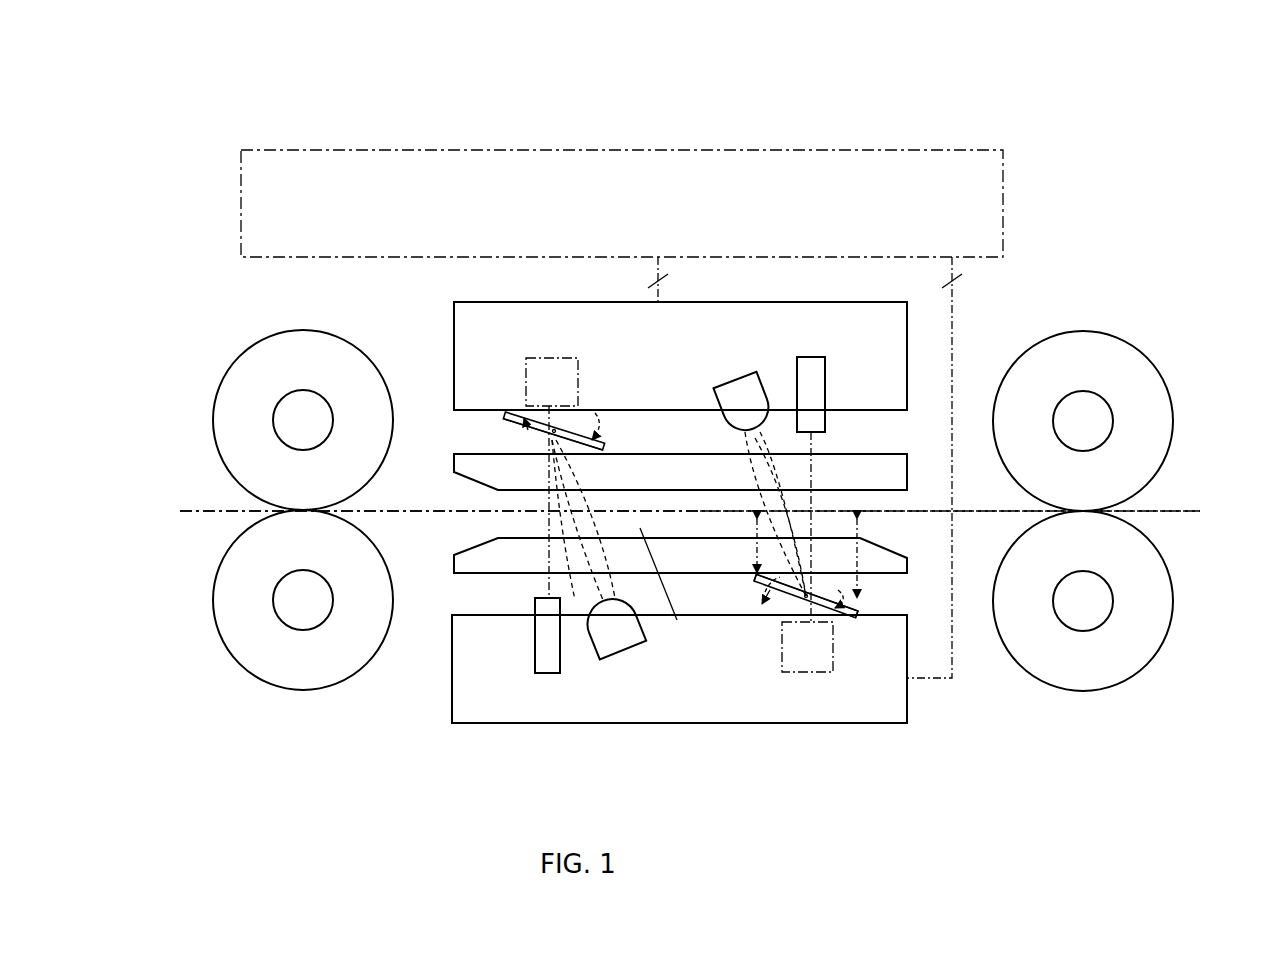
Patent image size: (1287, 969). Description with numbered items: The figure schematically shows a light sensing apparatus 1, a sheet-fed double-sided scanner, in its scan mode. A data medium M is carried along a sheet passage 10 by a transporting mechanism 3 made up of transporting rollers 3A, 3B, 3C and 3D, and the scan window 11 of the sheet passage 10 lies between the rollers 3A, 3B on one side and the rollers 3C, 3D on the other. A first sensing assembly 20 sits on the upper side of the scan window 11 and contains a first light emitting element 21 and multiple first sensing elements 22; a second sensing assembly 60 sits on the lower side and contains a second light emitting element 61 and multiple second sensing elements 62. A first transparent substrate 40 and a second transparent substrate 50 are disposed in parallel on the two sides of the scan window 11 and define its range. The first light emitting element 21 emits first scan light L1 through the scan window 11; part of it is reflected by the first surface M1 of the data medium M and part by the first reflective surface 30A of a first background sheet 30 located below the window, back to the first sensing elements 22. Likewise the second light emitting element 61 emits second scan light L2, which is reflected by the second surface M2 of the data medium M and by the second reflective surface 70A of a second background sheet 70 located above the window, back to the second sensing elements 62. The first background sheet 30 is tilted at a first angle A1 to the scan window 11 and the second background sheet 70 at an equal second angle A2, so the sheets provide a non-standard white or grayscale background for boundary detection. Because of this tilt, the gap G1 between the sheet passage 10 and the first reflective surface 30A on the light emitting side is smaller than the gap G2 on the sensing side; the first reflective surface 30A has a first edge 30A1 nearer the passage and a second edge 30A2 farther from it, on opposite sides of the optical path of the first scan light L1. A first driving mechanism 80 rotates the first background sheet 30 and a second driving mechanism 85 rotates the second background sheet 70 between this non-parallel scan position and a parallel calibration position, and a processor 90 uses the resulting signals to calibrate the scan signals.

The light sensing apparatus 1 is at (1068, 150).
The transporting mechanism 3 is at (1215, 216).
The transporting roller 3A is at (232, 392).
The transporting roller 3B is at (232, 567).
The transporting roller 3C is at (1145, 382).
The transporting roller 3D is at (1153, 612).
The sheet passage 10 is at (425, 548).
The scan window 11 is at (677, 620).
The first sensing assembly 20 is at (470, 345).
The first light emitting element 21 is at (730, 395).
The first sensing elements 22 is at (805, 372).
The first background sheet 30 is at (782, 592).
The first reflective surface 30A is at (823, 594).
The first edge 30A1 is at (755, 580).
The second edge 30A2 is at (858, 614).
The first transparent substrate 40 is at (880, 468).
The second transparent substrate 50 is at (487, 572).
The second sensing assembly 60 is at (458, 700).
The second light emitting element 61 is at (610, 655).
The second sensing elements 62 is at (545, 650).
The second background sheet 70 is at (505, 420).
The second reflective surface 70A is at (522, 432).
The first driving mechanism 80 is at (800, 672).
The second driving mechanism 85 is at (545, 358).
The processor 90 is at (248, 217).
The data medium M is at (175, 425).
The first surface M1 is at (210, 511).
The second surface M2 is at (223, 511).
The first scan light L1 is at (780, 474).
The second scan light L2 is at (573, 557).
The first angle A1 is at (845, 590).
The second angle A2 is at (581, 430).
The gap G1 is at (755, 560).
The gap G2 is at (860, 560).